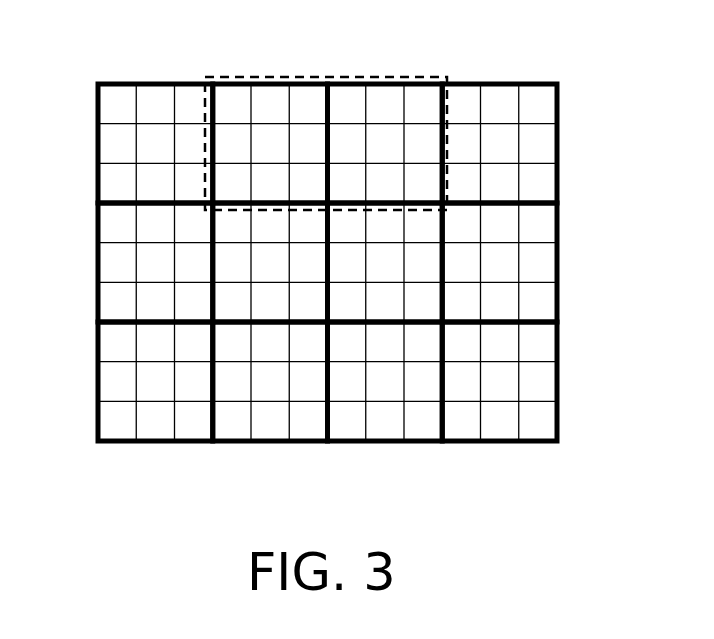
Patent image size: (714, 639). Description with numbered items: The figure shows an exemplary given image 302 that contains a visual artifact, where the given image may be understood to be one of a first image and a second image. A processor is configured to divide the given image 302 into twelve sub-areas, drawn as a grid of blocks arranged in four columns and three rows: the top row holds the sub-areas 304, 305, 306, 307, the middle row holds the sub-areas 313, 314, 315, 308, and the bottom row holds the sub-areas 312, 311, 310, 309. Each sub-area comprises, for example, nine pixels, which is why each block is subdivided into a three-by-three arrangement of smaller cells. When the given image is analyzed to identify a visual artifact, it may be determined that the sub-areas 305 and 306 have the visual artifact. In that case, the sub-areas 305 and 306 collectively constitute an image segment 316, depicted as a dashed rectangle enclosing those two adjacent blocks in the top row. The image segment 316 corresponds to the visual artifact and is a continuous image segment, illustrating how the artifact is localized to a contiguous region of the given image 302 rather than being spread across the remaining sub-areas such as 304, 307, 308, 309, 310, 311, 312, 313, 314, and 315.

The given image 302 is at (610, 62).
The sub-area 304 is at (150, 83).
The sub-area 305 is at (265, 83).
The sub-area 306 is at (390, 83).
The sub-area 307 is at (498, 83).
The sub-area 308 is at (557, 300).
The sub-area 309 is at (496, 442).
The sub-area 310 is at (380, 442).
The sub-area 311 is at (268, 442).
The sub-area 312 is at (148, 442).
The sub-area 313 is at (98, 300).
The sub-area 314 is at (212, 232).
The sub-area 315 is at (445, 232).
The image segment 316 is at (318, 77).